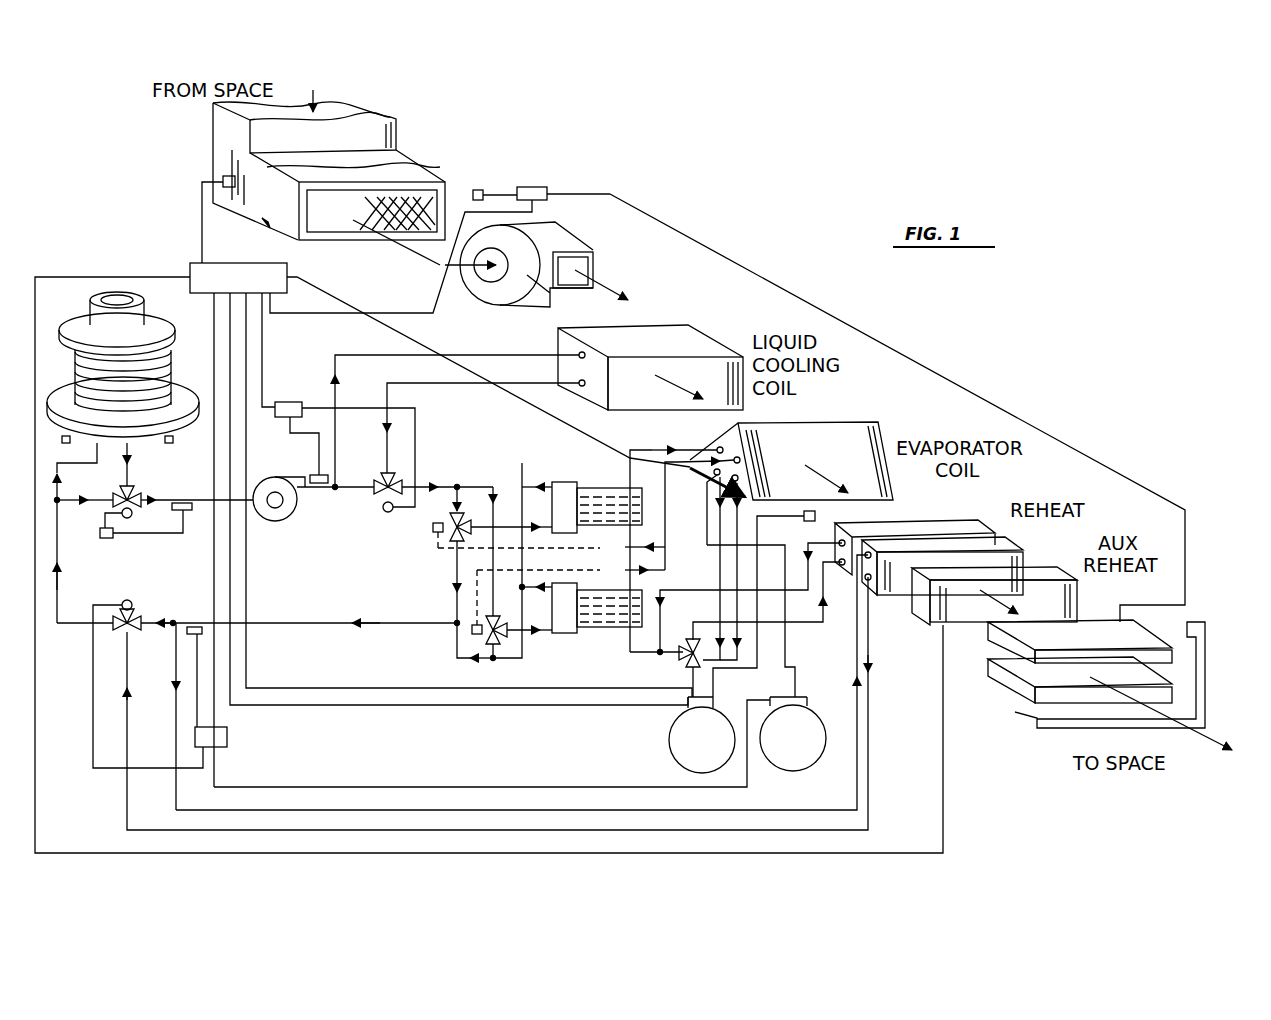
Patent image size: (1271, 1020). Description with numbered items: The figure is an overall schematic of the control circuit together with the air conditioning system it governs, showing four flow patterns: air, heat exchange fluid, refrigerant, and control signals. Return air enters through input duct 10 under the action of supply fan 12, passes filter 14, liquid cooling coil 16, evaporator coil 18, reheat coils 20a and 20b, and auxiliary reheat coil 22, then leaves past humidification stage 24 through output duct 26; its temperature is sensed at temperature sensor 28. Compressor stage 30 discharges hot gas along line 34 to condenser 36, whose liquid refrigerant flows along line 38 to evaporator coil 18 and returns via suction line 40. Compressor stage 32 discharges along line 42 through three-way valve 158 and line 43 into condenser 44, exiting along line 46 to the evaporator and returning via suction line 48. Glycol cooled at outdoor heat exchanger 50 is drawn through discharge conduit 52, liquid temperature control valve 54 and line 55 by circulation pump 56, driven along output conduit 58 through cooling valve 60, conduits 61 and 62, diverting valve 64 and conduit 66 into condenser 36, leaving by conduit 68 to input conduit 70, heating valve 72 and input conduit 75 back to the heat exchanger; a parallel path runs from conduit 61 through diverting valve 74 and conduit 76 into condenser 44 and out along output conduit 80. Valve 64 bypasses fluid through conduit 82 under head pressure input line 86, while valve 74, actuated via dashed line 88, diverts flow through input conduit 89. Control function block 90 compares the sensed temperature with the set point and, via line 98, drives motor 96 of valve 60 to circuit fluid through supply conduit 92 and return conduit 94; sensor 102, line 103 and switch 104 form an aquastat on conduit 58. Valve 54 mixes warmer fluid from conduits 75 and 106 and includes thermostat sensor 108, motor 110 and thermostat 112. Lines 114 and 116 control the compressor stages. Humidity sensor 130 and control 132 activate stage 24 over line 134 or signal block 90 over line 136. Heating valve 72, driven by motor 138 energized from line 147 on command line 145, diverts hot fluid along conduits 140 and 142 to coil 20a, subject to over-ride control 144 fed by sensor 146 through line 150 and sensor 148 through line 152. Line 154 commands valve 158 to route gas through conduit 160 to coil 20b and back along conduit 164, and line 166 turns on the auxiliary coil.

The return air duct 10 is at (388, 136).
The supply fan 12 is at (572, 248).
The filter 14 is at (430, 176).
The liquid cooling coil 16 is at (695, 330).
The evaporator coil 18 is at (855, 422).
The reheat coil 20a is at (1010, 544).
The reheat coil 20b is at (918, 528).
The auxiliary reheat coil 22 is at (1062, 594).
The humidification stage 24 is at (1130, 633).
The output duct 26 is at (1052, 732).
The temperature sensor 28 is at (221, 180).
The compressor stage 30 is at (806, 750).
The compressor stage 32 is at (715, 752).
The line 34 is at (789, 651).
The condenser 36 is at (608, 482).
The line 38 is at (680, 448).
The suction line 40 is at (808, 680).
The line 42 is at (690, 698).
The line 43 is at (632, 653).
The condenser 44 is at (613, 628).
The line 46 is at (668, 524).
The suction line 48 is at (712, 478).
The outdoor heat exchanger 50 is at (87, 320).
The discharge conduit 52 is at (118, 460).
The liquid temperature control valve 54 is at (131, 485).
The line 55 is at (172, 504).
The circulation pump 56 is at (272, 486).
The output conduit 58 is at (318, 522).
The cooling valve 60 is at (375, 493).
The conduit 61 is at (428, 486).
The conduit 62 is at (453, 499).
The diverting valve 64 is at (433, 531).
The conduit 66 is at (505, 470).
The conduit 68 is at (522, 475).
The input conduit 70 is at (292, 622).
The heating valve 72 is at (130, 634).
The diverting valve 74 is at (470, 630).
The input conduit 75 is at (60, 590).
The conduit 76 is at (540, 636).
The output conduit 80 is at (525, 592).
The conduit 82 is at (455, 586).
The pressure input line 86 is at (551, 548).
The dashed line 88 is at (571, 572).
The input conduit 89 is at (494, 660).
The control function block 90 is at (198, 276).
The liquid cooling coil supply conduit 92 is at (485, 355).
The conduit 94 is at (470, 383).
The motor 96 is at (384, 512).
The line 98 is at (264, 350).
The sensor 102 is at (320, 473).
The line 103 is at (289, 433).
The snap action switch 104 is at (282, 402).
The conduit 106 is at (98, 503).
The thermostat sensor 108 is at (184, 520).
The valve control motor 110 is at (133, 516).
The control thermostat 112 is at (107, 538).
The line 114 is at (338, 688).
The line 116 is at (383, 705).
The humidity sensor 130 is at (480, 190).
The humidity control system 132 is at (545, 188).
The line 134 is at (875, 343).
The line 136 is at (413, 312).
The motor 138 is at (131, 600).
The conduit 140 is at (410, 810).
The conduit 142 is at (388, 830).
The over-ride control 144 is at (228, 738).
The line 145 is at (213, 470).
The sensor 146 is at (200, 625).
The line 147 is at (91, 691).
The sensor 148 is at (815, 516).
The line 150 is at (177, 706).
The line 152 is at (443, 787).
The line 154 is at (557, 424).
The three-way valve 158 is at (685, 659).
The conduit 160 is at (806, 622).
The conduit 164 is at (825, 544).
The line 166 is at (945, 805).